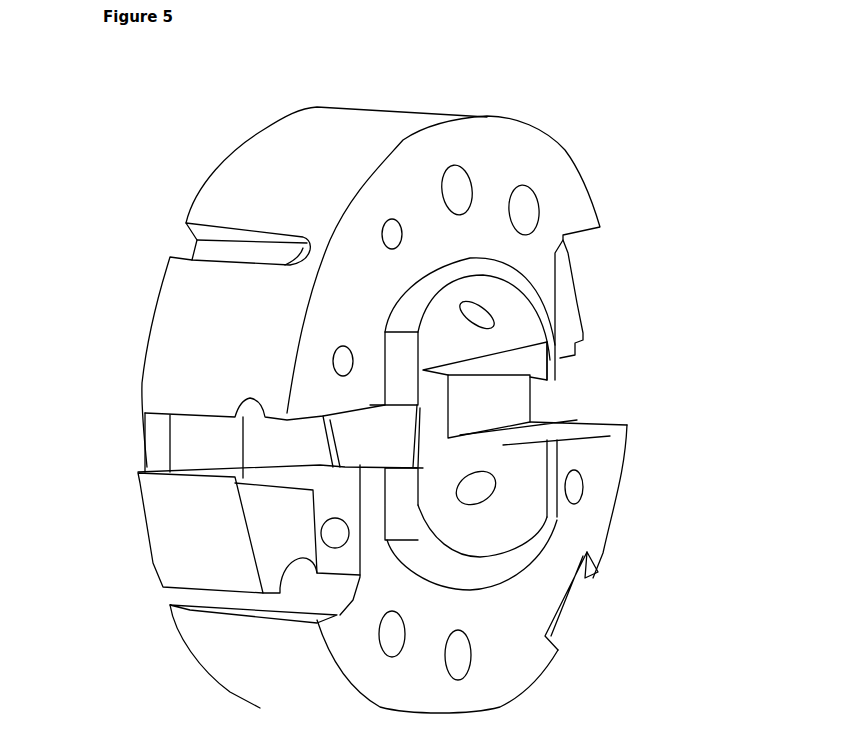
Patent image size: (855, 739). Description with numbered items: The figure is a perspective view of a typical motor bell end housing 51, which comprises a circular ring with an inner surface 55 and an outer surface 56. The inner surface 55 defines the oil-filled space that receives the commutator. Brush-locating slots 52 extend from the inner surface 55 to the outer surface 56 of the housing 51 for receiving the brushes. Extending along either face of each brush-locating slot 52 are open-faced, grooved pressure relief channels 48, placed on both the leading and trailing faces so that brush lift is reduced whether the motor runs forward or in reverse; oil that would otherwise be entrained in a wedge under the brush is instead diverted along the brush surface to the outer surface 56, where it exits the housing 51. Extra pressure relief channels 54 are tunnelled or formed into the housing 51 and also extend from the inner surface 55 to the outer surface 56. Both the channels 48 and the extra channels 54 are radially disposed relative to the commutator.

The pressure relief channel 48 is at (562, 400).
The motor bell end housing 51 is at (592, 193).
The brush-locating slot 52 is at (507, 362).
The extra pressure relief channel 54 is at (306, 243).
The inner surface 55 is at (515, 518).
The outer surface 56 is at (398, 120).